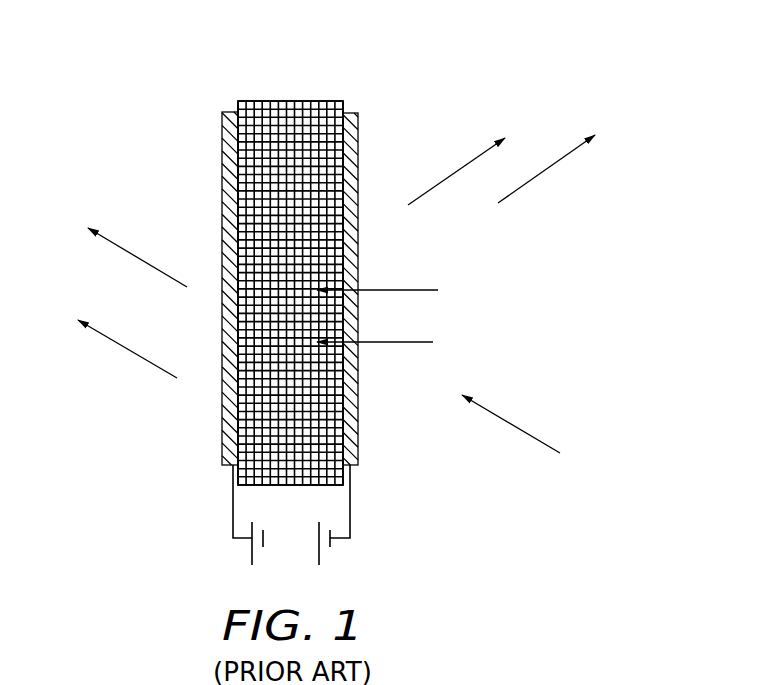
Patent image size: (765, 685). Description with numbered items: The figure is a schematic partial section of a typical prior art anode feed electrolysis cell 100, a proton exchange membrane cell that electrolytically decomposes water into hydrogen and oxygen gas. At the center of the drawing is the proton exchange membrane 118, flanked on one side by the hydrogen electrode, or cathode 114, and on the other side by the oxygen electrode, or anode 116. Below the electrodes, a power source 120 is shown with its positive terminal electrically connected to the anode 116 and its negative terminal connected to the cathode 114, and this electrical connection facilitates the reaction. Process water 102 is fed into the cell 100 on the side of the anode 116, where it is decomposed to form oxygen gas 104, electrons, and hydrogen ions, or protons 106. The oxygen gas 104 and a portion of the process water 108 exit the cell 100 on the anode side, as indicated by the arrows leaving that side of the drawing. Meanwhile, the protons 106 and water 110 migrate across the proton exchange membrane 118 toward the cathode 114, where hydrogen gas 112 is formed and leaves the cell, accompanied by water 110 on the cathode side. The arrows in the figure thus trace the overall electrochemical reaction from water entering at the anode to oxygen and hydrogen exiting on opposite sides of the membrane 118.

The anode feed electrolysis cell 100 is at (308, 80).
The process water 102 is at (536, 438).
The oxygen gas 104 is at (479, 159).
The hydrogen ions (protons) 106 is at (400, 273).
The portion of the process water 108 is at (569, 157).
The water 110 is at (410, 343).
The hydrogen gas 112 is at (114, 243).
The hydrogen electrode (cathode) 114 is at (223, 112).
The oxygen electrode (anode) 116 is at (358, 113).
The proton exchange membrane 118 is at (255, 101).
The power source 120 is at (352, 503).